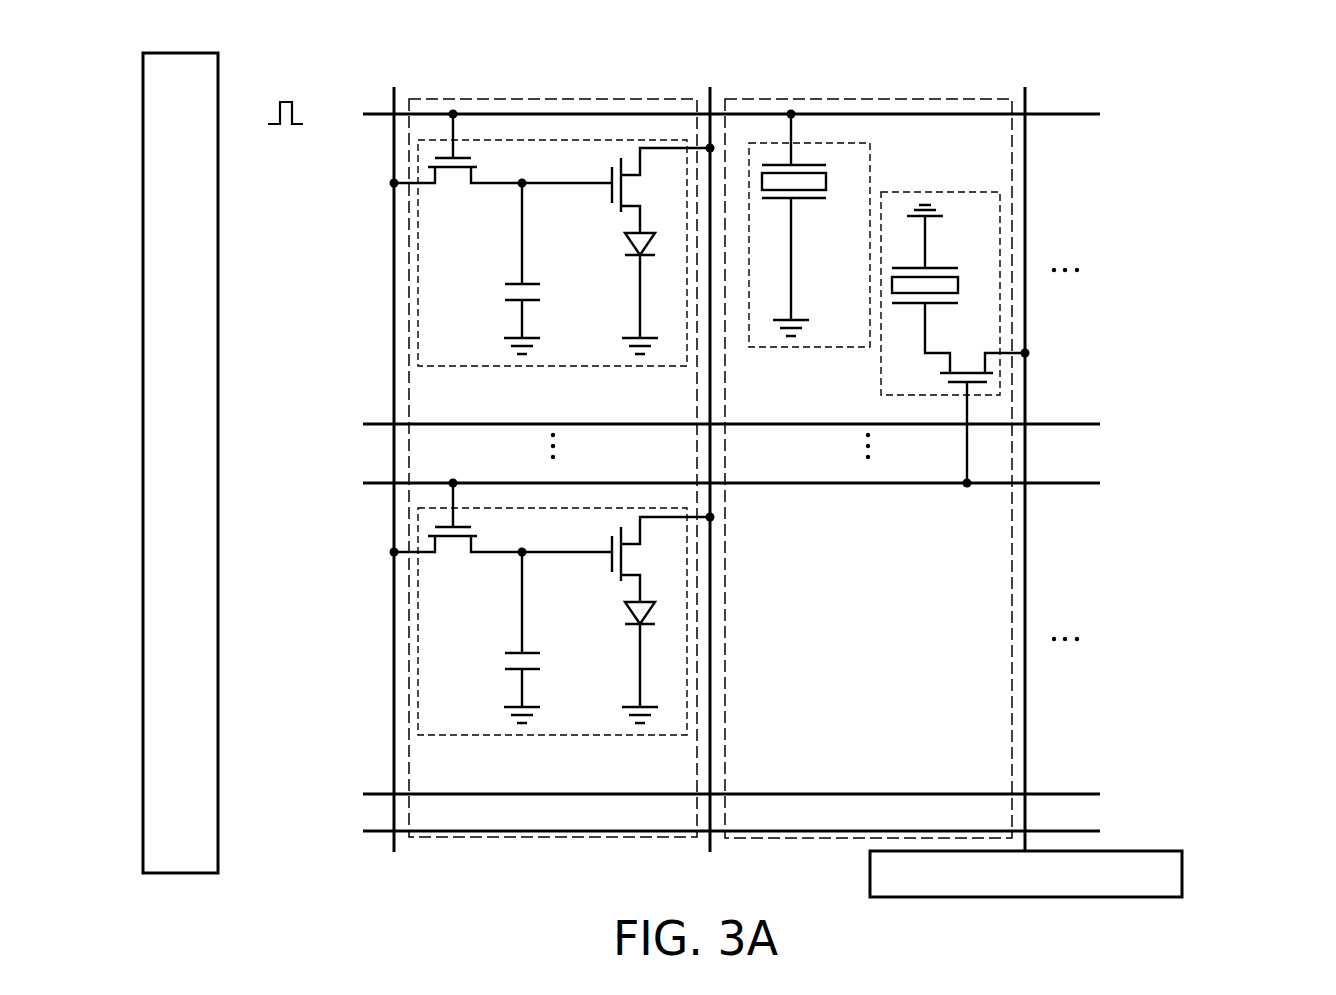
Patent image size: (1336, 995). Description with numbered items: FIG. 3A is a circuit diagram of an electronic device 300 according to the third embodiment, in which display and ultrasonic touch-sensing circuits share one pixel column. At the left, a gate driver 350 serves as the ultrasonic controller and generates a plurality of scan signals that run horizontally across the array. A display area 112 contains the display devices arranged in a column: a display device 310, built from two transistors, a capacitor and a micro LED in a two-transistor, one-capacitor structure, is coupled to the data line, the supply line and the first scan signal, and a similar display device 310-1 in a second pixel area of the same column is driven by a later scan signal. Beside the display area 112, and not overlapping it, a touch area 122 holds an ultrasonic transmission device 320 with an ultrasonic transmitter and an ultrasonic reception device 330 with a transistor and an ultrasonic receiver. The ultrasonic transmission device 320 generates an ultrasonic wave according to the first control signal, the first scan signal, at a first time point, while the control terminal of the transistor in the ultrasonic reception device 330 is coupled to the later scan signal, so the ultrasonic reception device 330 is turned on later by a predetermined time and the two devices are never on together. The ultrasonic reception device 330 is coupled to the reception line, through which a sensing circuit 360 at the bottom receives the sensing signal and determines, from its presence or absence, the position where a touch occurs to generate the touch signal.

The electronic device 300 is at (1335, 938).
The display area 112 is at (565, 838).
The touch area 122 is at (813, 840).
The display device 310 is at (548, 366).
The display device 310-1 is at (548, 735).
The ultrasonic transmission device 320 is at (773, 348).
The ultrasonic reception device 330 is at (913, 190).
The gate driver 350 is at (143, 420).
The sensing circuit 360 is at (1183, 872).